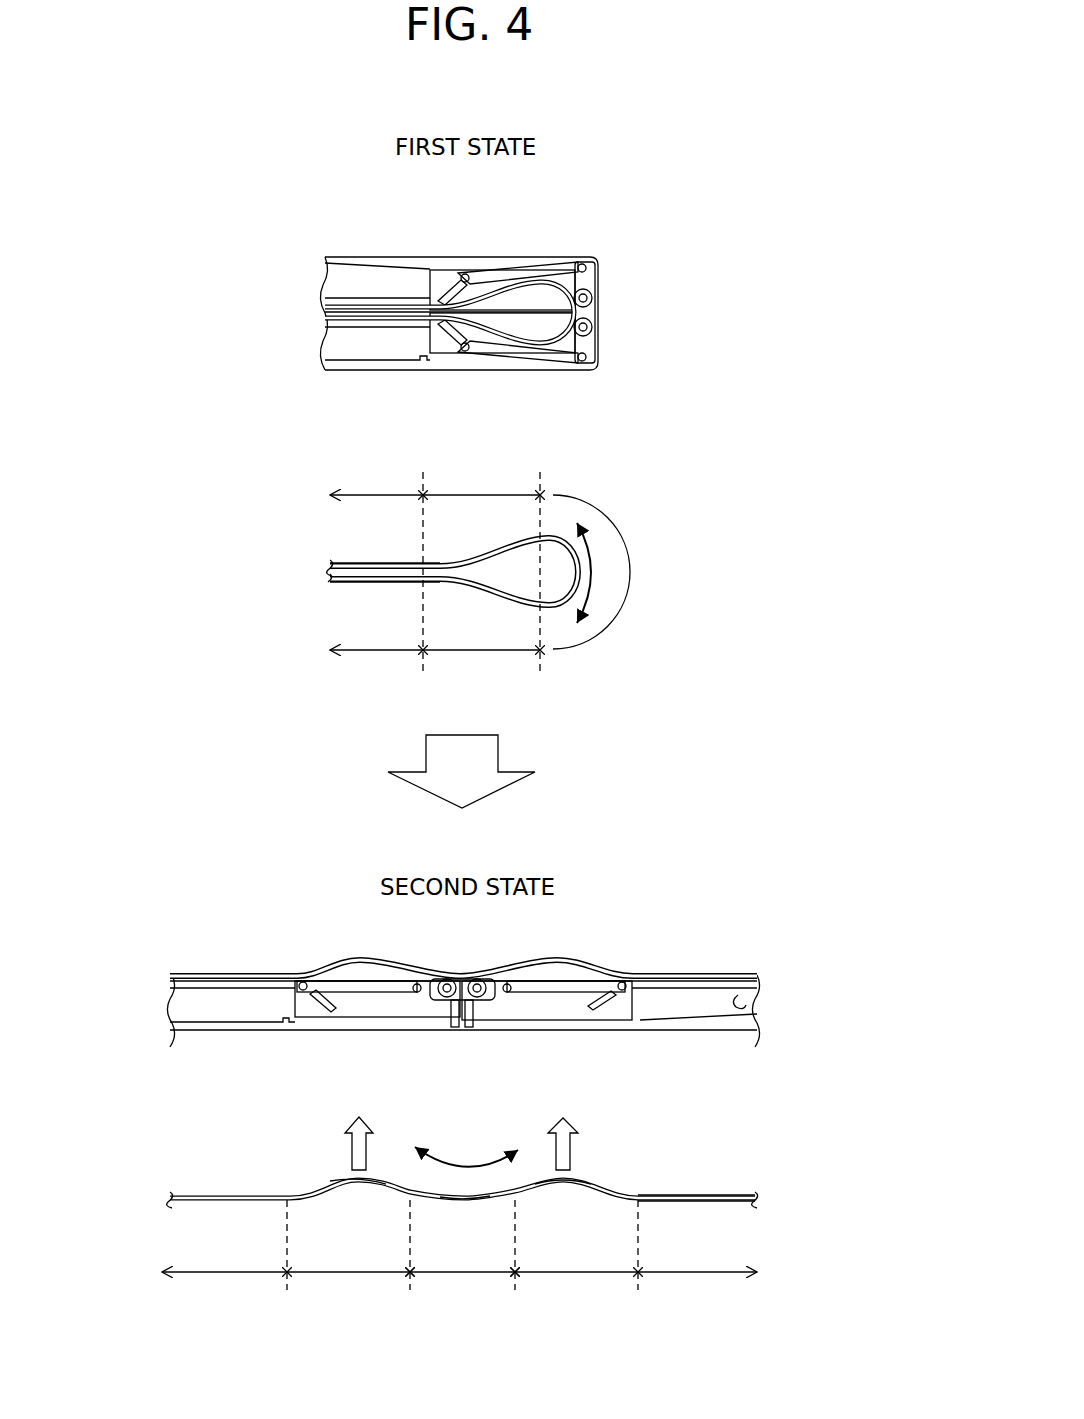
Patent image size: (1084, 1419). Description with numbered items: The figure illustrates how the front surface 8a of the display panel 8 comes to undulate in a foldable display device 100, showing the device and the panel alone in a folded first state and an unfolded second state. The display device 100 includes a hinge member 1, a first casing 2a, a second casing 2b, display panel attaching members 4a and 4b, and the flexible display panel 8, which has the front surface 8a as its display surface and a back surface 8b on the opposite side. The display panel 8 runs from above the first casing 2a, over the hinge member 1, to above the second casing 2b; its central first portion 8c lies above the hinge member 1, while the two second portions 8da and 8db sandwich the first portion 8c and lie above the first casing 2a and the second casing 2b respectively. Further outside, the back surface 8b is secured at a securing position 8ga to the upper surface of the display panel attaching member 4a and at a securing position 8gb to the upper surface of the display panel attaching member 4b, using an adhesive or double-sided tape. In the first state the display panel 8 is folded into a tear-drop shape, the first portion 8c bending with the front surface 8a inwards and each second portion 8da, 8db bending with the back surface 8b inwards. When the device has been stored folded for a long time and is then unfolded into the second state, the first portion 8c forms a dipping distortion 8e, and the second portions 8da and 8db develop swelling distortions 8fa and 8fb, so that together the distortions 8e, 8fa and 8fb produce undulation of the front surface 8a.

The display device 100 is at (647, 198).
The hinge member 1 is at (598, 300).
The first casing 2a is at (468, 268).
The second casing 2b is at (468, 356).
The display panel attaching member 4a is at (377, 300).
The display panel attaching member 4b is at (377, 328).
The display panel 8 is at (535, 280).
The front surface 8a is at (350, 564).
The back surface 8b is at (380, 582).
The first portion 8c is at (532, 898).
The second portion 8da is at (530, 885).
The second portion 8db is at (413, 975).
The distortion 8e is at (465, 1200).
The distortion 8fa is at (561, 1184).
The distortion 8fb is at (358, 1184).
The securing position 8ga is at (543, 885).
The securing position 8gb is at (292, 975).